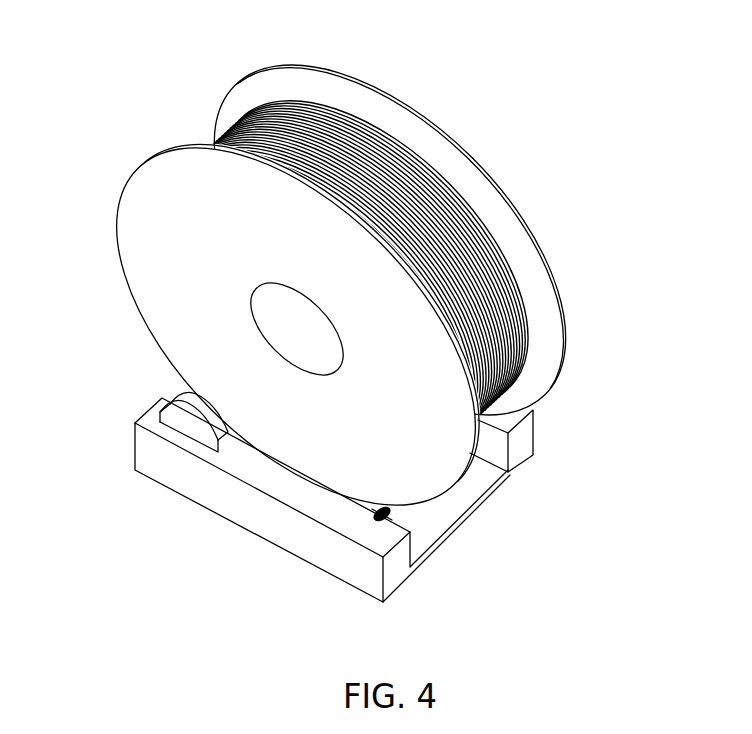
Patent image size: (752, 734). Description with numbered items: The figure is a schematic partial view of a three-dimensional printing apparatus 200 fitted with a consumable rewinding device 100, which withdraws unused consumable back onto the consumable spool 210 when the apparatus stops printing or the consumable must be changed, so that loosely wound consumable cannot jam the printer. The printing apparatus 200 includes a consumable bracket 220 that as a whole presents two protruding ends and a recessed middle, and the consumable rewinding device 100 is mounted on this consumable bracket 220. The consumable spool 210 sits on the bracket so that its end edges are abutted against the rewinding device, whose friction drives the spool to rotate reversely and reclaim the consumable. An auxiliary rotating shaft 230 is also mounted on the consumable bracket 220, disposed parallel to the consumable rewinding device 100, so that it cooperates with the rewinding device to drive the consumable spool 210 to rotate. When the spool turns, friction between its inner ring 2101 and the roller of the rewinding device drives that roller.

The consumable rewinding device 100 is at (163, 407).
The 3D printing apparatus 200 is at (80, 47).
The consumable spool 210 is at (532, 275).
The inner ring 2101 is at (267, 343).
The consumable bracket 220 is at (468, 495).
The auxiliary rotating shaft 230 is at (393, 512).